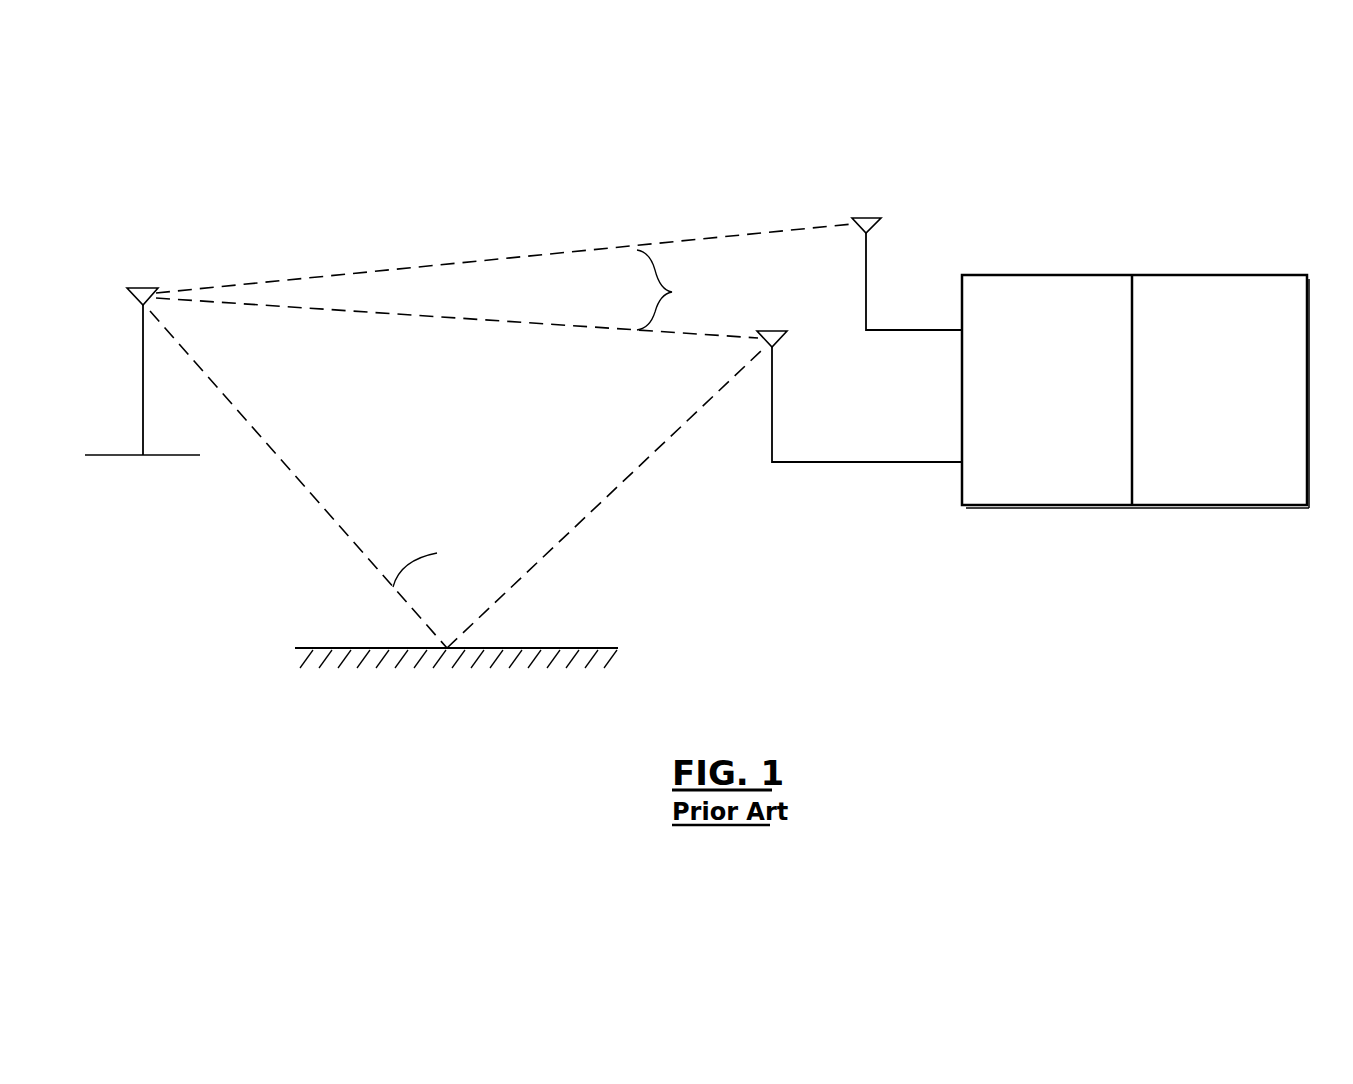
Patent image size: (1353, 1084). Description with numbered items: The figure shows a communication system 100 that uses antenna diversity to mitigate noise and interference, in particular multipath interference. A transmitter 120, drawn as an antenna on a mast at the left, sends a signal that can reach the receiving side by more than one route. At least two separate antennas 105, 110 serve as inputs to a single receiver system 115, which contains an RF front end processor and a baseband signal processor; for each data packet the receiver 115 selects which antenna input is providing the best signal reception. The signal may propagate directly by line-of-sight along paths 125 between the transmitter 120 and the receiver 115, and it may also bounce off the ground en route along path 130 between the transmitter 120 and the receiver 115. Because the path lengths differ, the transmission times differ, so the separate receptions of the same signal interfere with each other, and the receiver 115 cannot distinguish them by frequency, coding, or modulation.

The communication system 100 is at (246, 198).
The antenna 105 is at (866, 218).
The antenna 110 is at (771, 330).
The receiver system 115 is at (1132, 560).
The transmitter 120 is at (145, 506).
The paths 125 is at (679, 290).
The path 130 is at (467, 633).